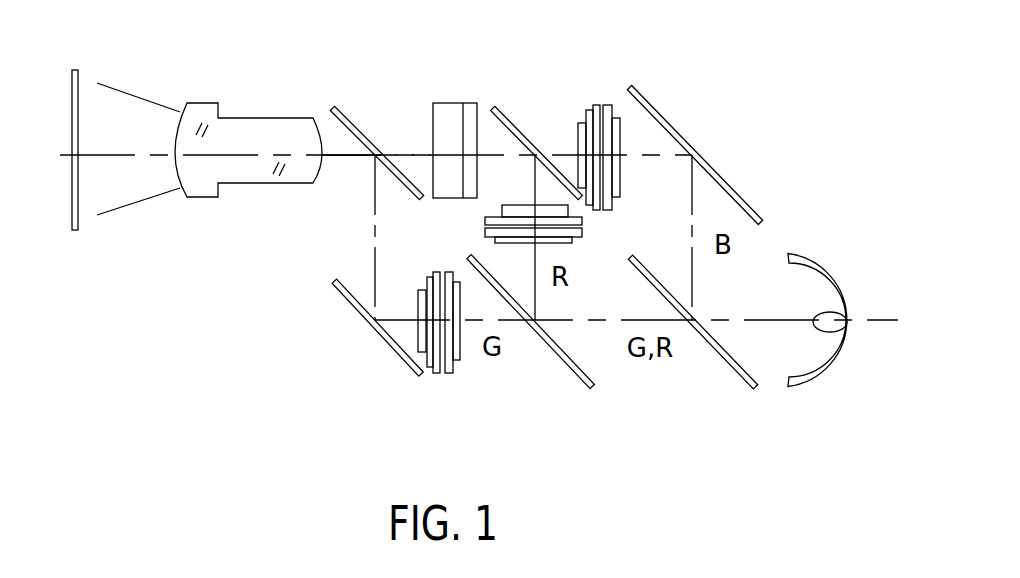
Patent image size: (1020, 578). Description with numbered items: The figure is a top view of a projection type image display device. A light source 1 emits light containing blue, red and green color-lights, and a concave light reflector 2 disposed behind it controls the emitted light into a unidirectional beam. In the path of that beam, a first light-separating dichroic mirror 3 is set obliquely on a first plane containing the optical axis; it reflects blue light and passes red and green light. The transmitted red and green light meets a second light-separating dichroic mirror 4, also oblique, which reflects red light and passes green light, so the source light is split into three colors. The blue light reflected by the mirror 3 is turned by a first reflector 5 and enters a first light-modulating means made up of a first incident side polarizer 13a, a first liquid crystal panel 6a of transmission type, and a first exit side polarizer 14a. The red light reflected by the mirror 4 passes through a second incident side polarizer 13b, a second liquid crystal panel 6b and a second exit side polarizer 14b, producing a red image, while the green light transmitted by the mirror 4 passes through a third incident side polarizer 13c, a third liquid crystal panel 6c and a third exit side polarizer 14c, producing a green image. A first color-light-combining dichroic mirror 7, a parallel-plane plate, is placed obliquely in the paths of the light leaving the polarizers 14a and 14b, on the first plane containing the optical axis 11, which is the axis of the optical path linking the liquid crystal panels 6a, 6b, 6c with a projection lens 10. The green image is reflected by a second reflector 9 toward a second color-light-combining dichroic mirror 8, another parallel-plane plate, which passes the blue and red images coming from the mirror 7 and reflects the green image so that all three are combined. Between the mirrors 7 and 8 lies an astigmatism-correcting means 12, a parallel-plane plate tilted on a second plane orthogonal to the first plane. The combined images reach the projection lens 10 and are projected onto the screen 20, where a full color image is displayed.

The light source 1 is at (823, 330).
The concave light reflector 2 is at (793, 390).
The first light-separating dichroic mirror 3 is at (735, 377).
The second light-separating dichroic mirror 4 is at (563, 355).
The first reflector 5 is at (692, 143).
The first liquid crystal panel 6a is at (600, 107).
The second liquid crystal panel 6b is at (582, 220).
The third liquid crystal panel 6c is at (437, 373).
The first color-light-combining dichroic mirror 7 is at (505, 108).
The second color-light-combining dichroic mirror 8 is at (338, 107).
The second reflector 9 is at (350, 307).
The projection lens 10 is at (240, 117).
The optical axis 11 is at (400, 155).
The astigmatism-correcting means 12 is at (450, 102).
The first incident side polarizer 13a is at (620, 111).
The second incident side polarizer 13b is at (572, 243).
The third incident side polarizer 13c is at (460, 362).
The first exit side polarizer 14a is at (580, 118).
The second exit side polarizer 14b is at (501, 209).
The third exit side polarizer 14c is at (418, 297).
The screen 20 is at (73, 202).